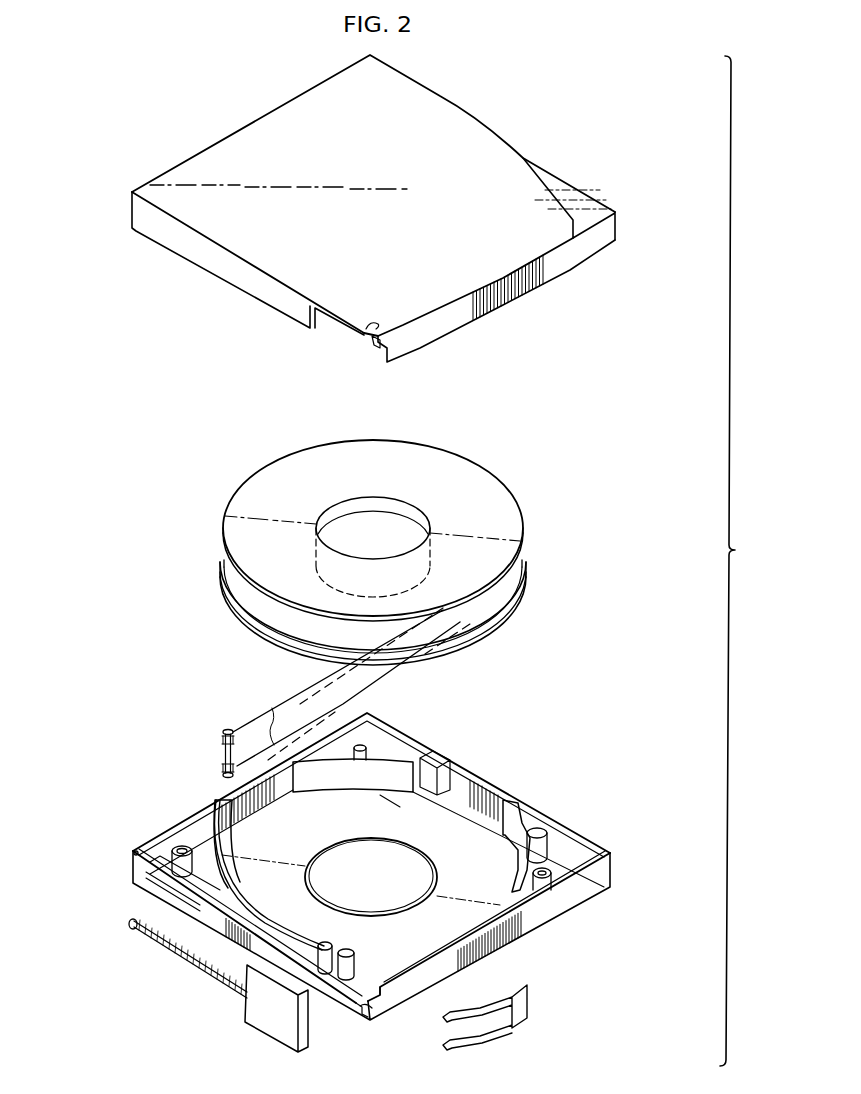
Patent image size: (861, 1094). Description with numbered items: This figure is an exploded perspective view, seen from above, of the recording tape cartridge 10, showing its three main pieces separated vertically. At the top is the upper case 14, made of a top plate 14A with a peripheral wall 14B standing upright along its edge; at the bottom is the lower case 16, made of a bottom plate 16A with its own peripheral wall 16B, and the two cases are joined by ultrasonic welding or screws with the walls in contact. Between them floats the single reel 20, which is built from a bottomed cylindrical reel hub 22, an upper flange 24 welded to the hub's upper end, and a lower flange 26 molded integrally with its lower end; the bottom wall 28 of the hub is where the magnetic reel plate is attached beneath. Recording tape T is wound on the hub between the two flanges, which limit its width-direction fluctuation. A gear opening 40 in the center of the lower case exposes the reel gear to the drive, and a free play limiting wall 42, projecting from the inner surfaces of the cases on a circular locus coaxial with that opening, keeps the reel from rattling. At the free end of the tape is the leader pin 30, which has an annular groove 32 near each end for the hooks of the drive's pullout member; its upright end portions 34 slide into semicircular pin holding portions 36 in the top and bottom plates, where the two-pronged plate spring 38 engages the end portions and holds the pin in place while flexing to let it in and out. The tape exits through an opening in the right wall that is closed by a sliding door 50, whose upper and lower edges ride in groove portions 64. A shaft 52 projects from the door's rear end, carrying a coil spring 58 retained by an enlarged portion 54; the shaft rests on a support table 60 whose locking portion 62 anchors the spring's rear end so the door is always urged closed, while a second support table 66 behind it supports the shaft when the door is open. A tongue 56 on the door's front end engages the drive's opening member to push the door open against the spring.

The recording tape cartridge 10 is at (608, 117).
The upper case 14 is at (400, 560).
The top plate 14A is at (465, 142).
The peripheral wall 14B is at (207, 252).
The lower case 16 is at (368, 879).
The bottom plate 16A is at (457, 813).
The peripheral wall 16B is at (146, 872).
The reel 20 is at (405, 531).
The reel hub 22 is at (335, 519).
The upper flange 24 is at (447, 473).
The lower flange 26 is at (525, 575).
The bottom wall 28 is at (363, 552).
The leader pin 30 is at (194, 745).
The annular groove 32 is at (223, 732).
The end portions 34 is at (227, 730).
The pin holding portions 36 is at (362, 333).
The plate spring 38 is at (513, 1013).
The gear opening 40 is at (419, 851).
The free play limiting wall 42 is at (388, 778).
The door 50 is at (284, 1027).
The shaft 52 is at (157, 961).
The enlarged portion 54 is at (129, 925).
The tongue 56 is at (305, 1035).
The coil spring 58 is at (152, 937).
The support table 60 is at (220, 878).
The locking portion 62 is at (193, 851).
The groove portions 64 is at (335, 1001).
The support table 66 is at (167, 872).
The recording tape T is at (261, 739).